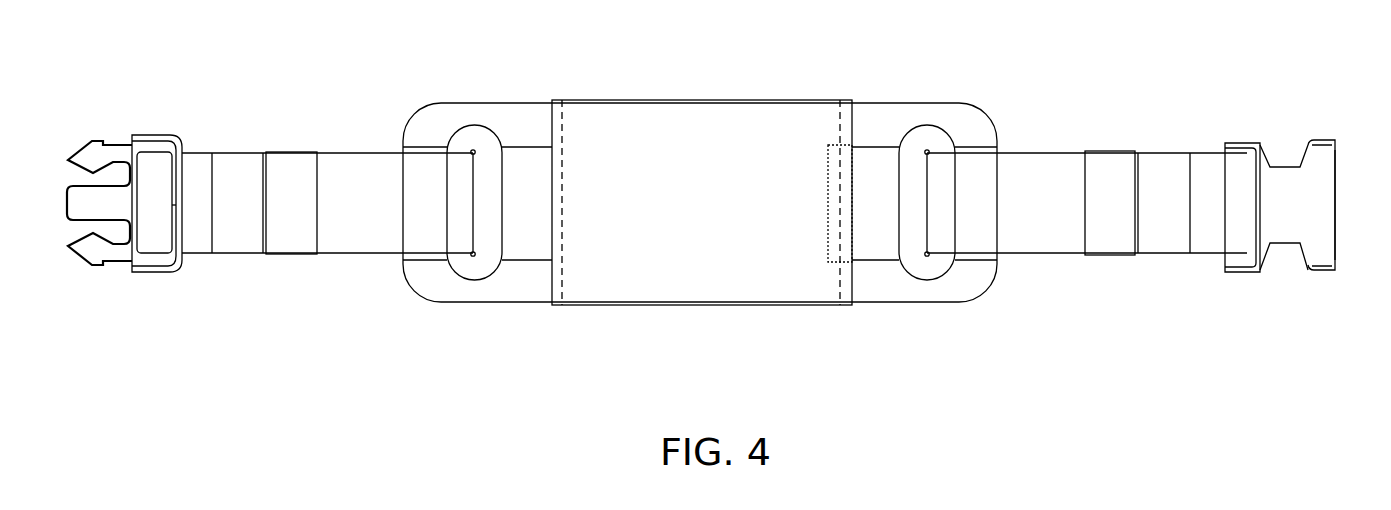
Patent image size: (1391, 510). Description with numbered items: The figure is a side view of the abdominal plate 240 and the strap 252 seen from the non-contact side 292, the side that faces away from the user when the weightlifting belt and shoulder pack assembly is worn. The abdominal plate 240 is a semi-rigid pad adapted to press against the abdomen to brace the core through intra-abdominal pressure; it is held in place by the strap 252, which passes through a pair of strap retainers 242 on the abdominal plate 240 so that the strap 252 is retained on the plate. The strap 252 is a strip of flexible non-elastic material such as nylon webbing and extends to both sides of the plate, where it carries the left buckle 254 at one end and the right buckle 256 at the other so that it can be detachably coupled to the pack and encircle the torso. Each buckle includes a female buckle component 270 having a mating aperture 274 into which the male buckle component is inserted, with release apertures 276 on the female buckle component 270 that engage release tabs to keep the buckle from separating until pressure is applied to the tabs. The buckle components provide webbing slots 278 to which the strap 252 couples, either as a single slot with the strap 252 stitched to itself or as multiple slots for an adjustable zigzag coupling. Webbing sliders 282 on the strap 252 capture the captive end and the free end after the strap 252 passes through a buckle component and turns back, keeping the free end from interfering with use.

The abdominal plate 240 is at (728, 120).
The strap retainers 242 is at (470, 268).
The strap 252 is at (342, 167).
The left buckle 254 is at (1265, 232).
The right buckle 256 is at (90, 265).
The female buckle component 270 is at (1344, 271).
The mating aperture 274 is at (1318, 205).
The release apertures 276 is at (1282, 167).
The webbing slots 278 is at (1240, 257).
The webbing sliders 282 is at (282, 167).
The non-contact side 292 is at (622, 328).